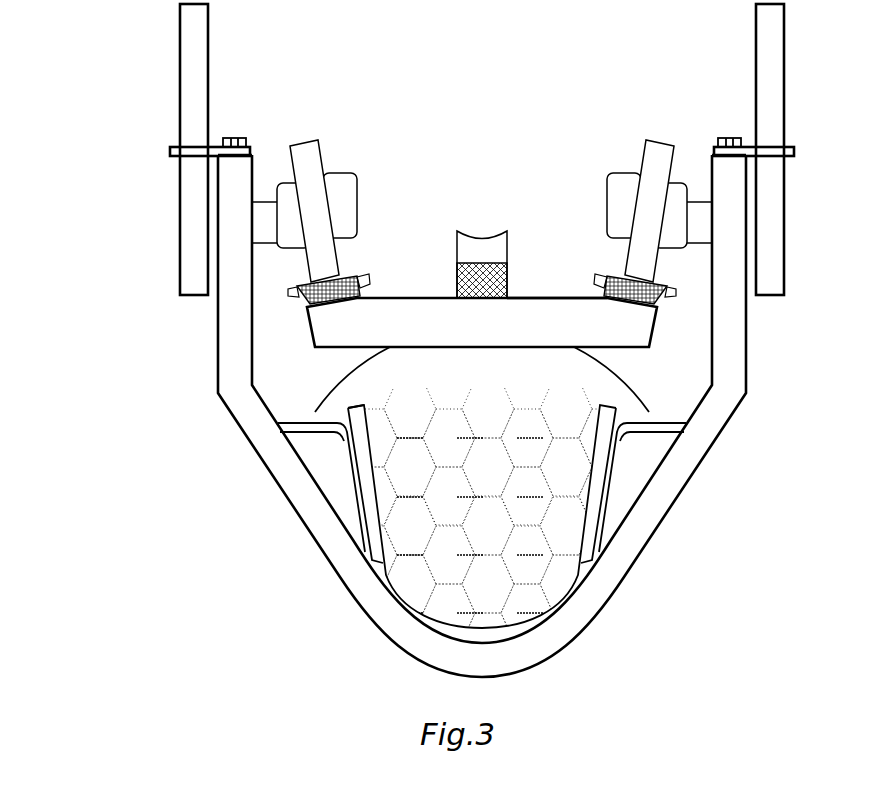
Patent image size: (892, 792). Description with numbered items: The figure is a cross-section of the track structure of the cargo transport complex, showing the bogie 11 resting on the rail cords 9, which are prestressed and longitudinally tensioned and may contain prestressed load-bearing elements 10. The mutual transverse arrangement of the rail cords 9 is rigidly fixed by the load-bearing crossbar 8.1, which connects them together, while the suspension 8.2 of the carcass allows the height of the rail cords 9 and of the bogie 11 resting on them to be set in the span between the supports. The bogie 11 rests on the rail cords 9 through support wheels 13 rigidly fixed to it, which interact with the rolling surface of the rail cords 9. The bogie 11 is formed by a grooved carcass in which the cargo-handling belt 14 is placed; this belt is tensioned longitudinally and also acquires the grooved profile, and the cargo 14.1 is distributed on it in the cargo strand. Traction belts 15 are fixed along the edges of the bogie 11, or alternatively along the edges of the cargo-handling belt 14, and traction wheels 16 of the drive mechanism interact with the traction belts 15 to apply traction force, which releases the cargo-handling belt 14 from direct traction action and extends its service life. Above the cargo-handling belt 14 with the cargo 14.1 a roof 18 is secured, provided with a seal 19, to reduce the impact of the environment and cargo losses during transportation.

The traction wheel 16 is at (195, 73).
The traction belt 15 is at (190, 148).
The bogie 11 is at (230, 172).
The support wheel 13 is at (298, 153).
The rail cord 9 is at (291, 292).
The load-bearing element 10 is at (312, 306).
The suspension 8.2 is at (487, 253).
The load-bearing crossbar 8.1 is at (540, 298).
The seal 19 is at (345, 397).
The roof 18 is at (349, 391).
The cargo-handling belt 14 is at (367, 458).
The cargo 14.1 is at (402, 505).